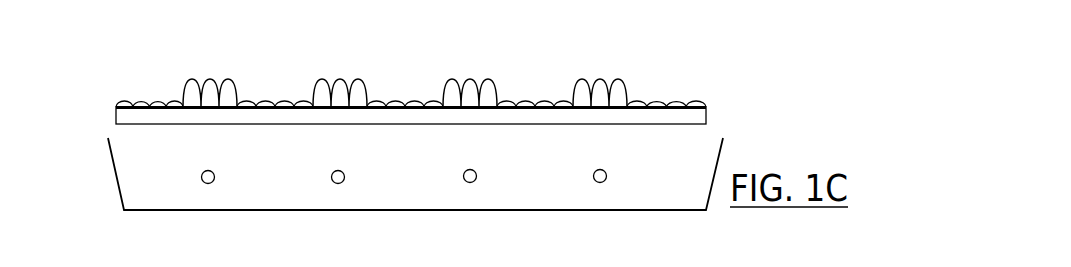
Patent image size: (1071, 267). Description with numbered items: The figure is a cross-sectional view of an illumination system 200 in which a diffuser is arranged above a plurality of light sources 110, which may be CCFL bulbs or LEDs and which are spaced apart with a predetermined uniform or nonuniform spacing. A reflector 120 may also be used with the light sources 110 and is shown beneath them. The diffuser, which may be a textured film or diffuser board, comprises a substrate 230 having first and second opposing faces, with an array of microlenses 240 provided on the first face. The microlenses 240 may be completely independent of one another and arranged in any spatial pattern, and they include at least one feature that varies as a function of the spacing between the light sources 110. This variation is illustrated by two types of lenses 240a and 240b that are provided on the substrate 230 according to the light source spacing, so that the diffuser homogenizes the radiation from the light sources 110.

The light sources 110 is at (213, 183).
The reflector 120 is at (687, 224).
The illumination system 200 is at (411, 81).
The substrate 230 is at (714, 114).
The microlenses 240 is at (378, 81).
The first type of lenses 240a is at (210, 71).
The second type of lenses 240b is at (410, 91).